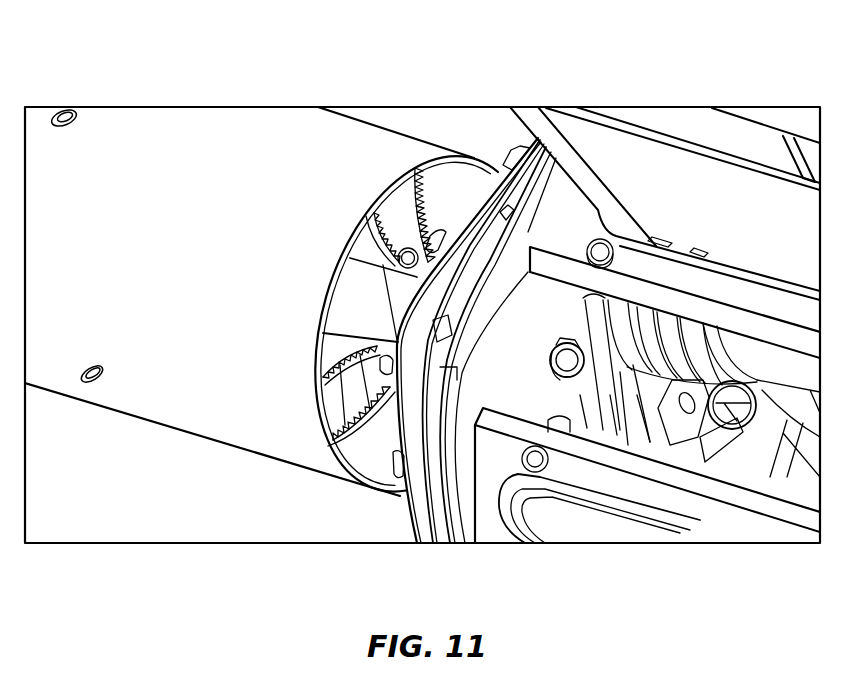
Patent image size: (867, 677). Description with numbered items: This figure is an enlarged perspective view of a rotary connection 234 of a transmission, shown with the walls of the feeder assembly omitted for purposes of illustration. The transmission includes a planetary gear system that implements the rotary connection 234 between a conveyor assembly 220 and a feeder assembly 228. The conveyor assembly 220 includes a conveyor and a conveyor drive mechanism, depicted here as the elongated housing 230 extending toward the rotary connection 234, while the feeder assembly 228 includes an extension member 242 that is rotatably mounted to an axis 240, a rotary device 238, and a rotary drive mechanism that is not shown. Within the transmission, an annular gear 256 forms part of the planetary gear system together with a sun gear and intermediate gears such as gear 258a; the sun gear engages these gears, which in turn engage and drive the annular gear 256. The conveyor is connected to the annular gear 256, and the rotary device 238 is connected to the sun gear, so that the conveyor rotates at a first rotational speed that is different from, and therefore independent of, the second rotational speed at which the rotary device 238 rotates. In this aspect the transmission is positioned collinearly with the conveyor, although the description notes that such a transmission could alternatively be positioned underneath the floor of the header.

The conveyor assembly 220 is at (241, 88).
The feeder assembly 228 is at (565, 558).
The tube 230 is at (183, 127).
The rotary connection 234 is at (462, 195).
The rotary device 238 is at (687, 507).
The axis 240 is at (772, 385).
The extension member 242 is at (668, 173).
The annular gear 256 is at (405, 455).
The gear 258a is at (397, 195).